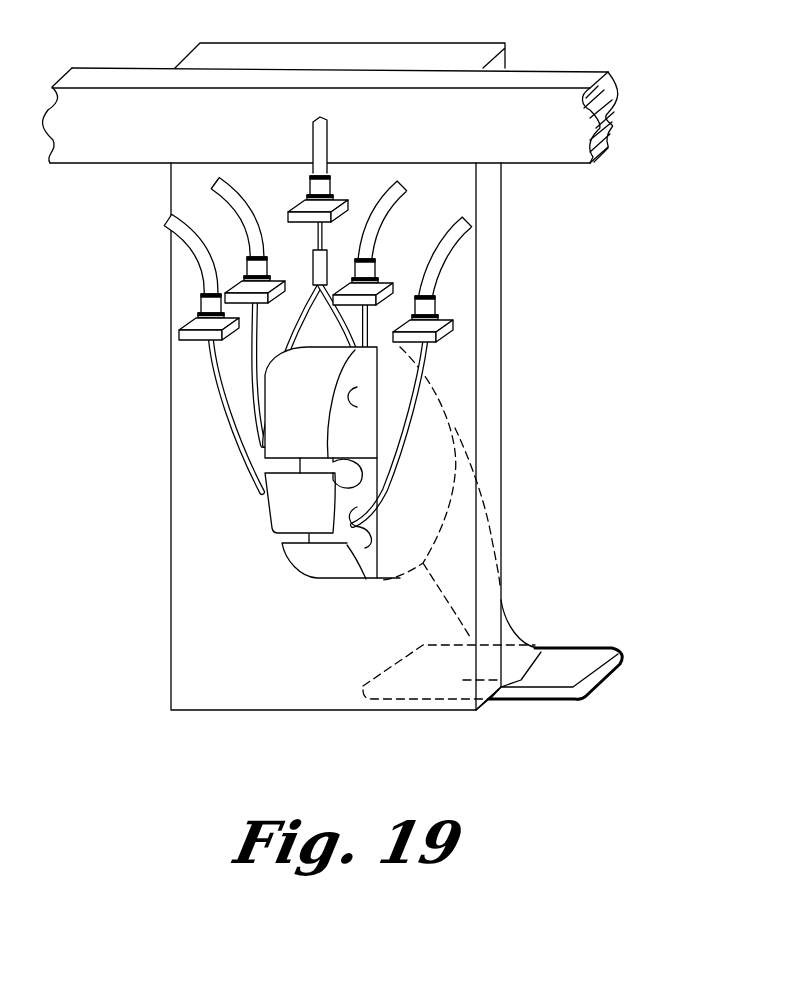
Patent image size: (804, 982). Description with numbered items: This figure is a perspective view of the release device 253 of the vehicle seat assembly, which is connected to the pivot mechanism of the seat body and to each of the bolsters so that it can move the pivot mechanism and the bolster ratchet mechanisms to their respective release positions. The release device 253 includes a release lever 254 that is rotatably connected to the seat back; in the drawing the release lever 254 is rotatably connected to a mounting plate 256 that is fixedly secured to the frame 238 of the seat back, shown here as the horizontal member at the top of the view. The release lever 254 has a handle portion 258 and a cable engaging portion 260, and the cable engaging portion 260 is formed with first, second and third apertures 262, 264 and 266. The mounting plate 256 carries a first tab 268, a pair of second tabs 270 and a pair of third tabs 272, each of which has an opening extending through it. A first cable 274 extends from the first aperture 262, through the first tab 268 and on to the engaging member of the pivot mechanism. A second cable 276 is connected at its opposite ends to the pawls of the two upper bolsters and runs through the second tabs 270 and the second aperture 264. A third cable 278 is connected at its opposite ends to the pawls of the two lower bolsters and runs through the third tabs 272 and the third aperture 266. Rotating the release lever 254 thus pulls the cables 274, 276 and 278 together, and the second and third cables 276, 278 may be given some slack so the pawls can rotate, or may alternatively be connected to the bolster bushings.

The frame 238 is at (578, 72).
The release device 253 is at (522, 516).
The release lever 254 is at (572, 643).
The mounting plate 256 is at (168, 538).
The handle portion 258 is at (578, 700).
The cable engaging portion 260 is at (290, 560).
The first aperture 262 is at (357, 395).
The second aperture 264 is at (350, 458).
The third aperture 266 is at (357, 517).
The first tab 268 is at (347, 209).
The second tabs 270 is at (423, 302).
The third tabs 272 is at (178, 343).
The first cable 274 is at (328, 236).
The second cable 276 is at (200, 297).
The third cable 278 is at (205, 372).